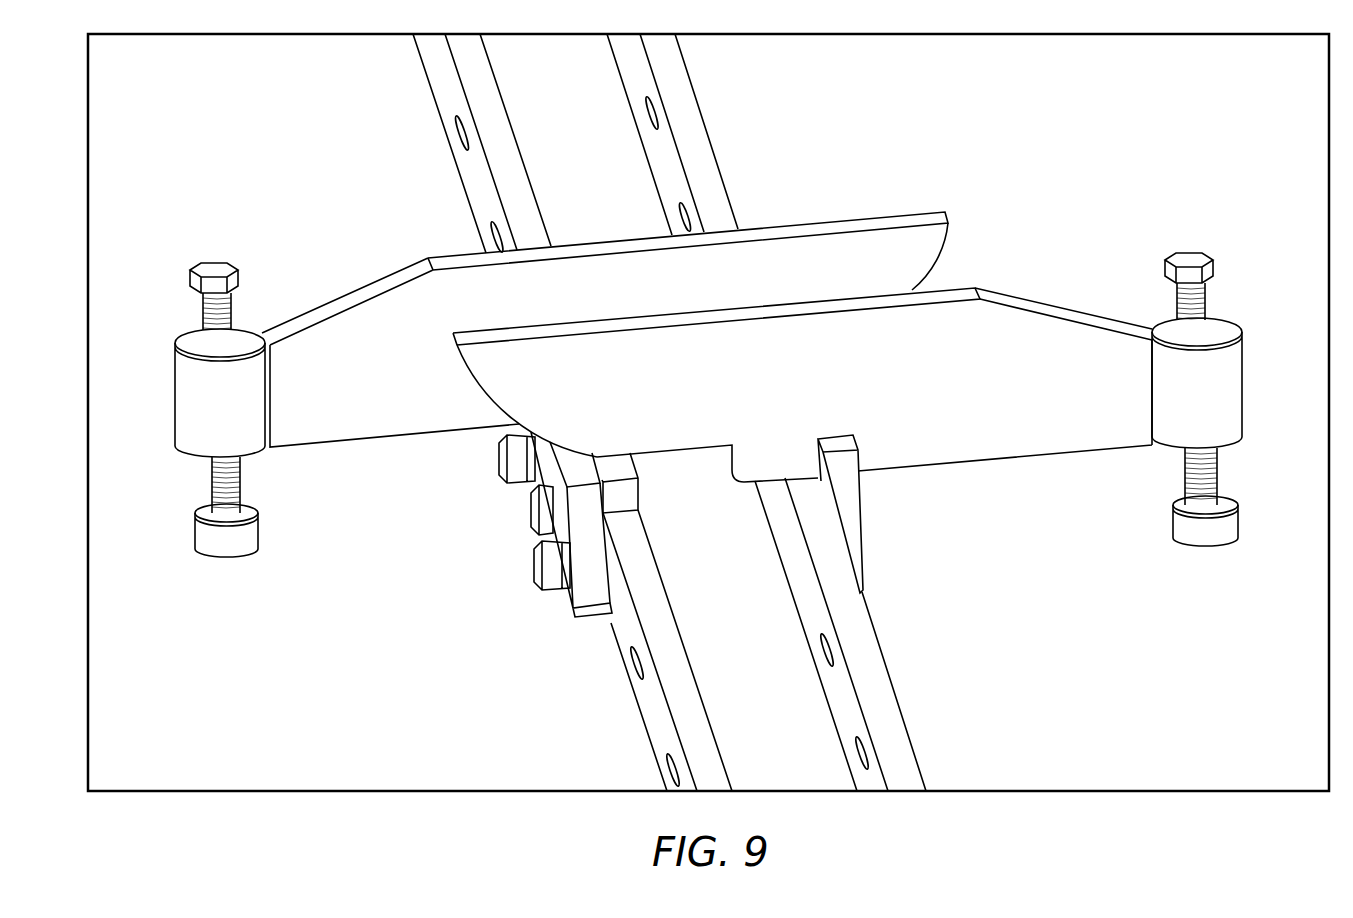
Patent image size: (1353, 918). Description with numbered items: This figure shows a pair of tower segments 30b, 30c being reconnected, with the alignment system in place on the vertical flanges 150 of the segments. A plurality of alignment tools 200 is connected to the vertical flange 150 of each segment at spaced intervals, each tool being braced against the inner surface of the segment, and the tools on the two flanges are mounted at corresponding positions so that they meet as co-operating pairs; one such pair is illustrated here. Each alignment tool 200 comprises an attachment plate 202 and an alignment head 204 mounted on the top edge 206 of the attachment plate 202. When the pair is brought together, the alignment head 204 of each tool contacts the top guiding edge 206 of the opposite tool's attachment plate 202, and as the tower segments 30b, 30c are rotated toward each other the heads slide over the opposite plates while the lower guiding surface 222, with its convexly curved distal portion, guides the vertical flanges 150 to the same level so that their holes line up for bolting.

The longitudinal flange 150 is at (465, 67).
The alignment tool 200 is at (331, 264).
The attachment plate 202 is at (582, 595).
The alignment head 204 is at (822, 248).
The top guiding edge 206 is at (575, 457).
The lower guiding surface 222 is at (945, 250).
The tower segment 30b is at (381, 661).
The tower segment 30c is at (1116, 635).